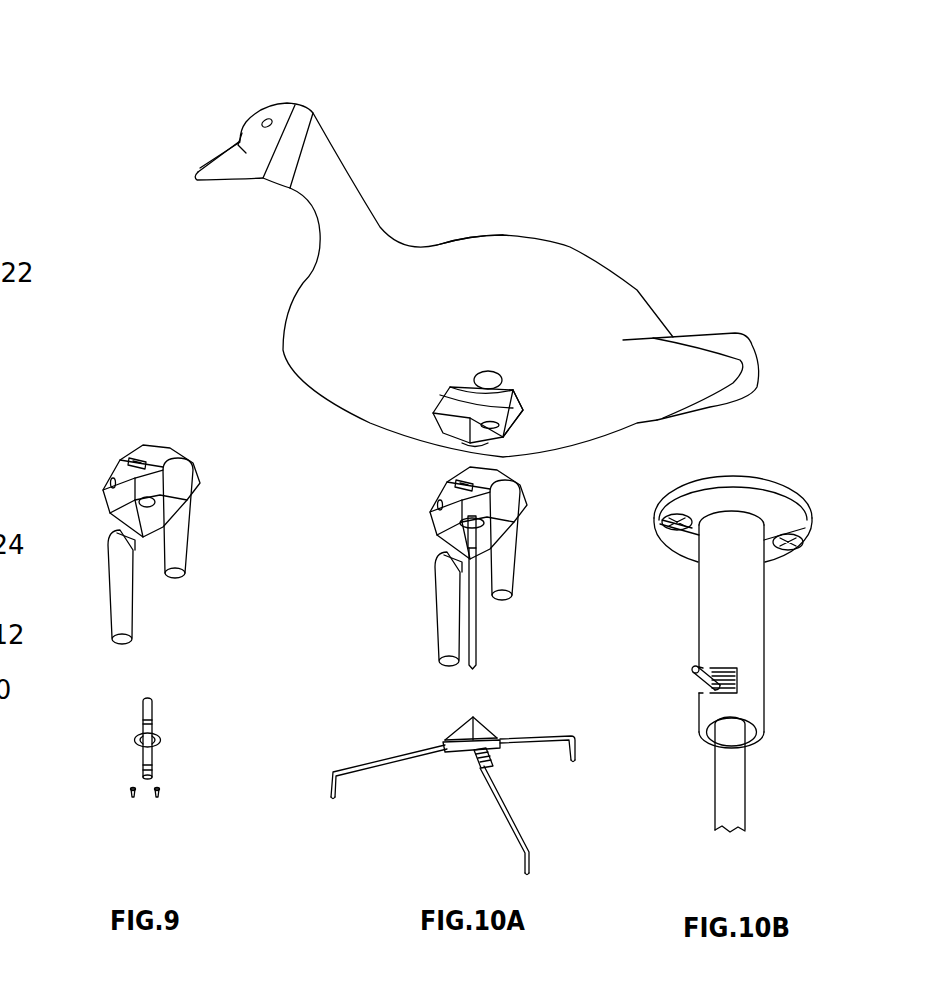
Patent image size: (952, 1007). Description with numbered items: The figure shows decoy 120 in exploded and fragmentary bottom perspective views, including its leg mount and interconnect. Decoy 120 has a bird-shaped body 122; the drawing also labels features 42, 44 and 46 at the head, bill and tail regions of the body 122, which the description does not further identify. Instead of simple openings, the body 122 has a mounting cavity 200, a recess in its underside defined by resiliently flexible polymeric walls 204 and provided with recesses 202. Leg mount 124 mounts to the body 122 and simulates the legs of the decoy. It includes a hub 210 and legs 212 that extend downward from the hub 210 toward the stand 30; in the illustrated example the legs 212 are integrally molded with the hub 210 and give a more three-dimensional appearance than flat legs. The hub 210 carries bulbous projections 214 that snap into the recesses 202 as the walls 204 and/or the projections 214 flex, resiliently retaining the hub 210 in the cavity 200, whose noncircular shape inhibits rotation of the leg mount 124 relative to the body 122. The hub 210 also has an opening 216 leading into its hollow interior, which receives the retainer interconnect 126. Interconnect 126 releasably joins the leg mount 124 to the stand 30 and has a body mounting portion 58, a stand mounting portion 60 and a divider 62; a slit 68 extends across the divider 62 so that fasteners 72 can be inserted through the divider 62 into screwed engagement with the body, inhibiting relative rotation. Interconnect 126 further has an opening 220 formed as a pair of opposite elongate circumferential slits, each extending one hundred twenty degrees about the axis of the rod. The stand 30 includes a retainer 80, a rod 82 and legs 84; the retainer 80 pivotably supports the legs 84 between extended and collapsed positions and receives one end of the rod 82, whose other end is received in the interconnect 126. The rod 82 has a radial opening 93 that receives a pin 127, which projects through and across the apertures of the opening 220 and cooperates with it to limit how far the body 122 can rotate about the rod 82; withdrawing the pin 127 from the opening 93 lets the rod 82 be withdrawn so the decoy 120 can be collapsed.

In FIG. 9, the decoy 120 is at (493, 160).
In FIG. 10B, the decoy 120 is at (756, 616).
In FIG. 9, the body 122 is at (610, 267).
In FIG. 9, the head 42 is at (313, 111).
In FIG. 9, the bill 44 is at (200, 170).
In FIG. 9, the tail 46 is at (743, 335).
In FIG. 9, the mounting cavity 200 is at (443, 403).
In FIG. 9, the recesses 202 is at (503, 422).
In FIG. 9, the resiliently flexible polymeric walls 204 is at (523, 410).
In FIG. 9, the hub 210 is at (197, 493).
In FIG. 10A, the hub 210 is at (534, 513).
In FIG. 9, the legs 212 is at (180, 543).
In FIG. 10A, the legs 212 is at (467, 573).
In FIG. 9, the projections 214 is at (135, 460).
In FIG. 10A, the projections 214 is at (408, 465).
In FIG. 9, the opening 216 is at (140, 500).
In FIG. 10A, the leg mount 124 is at (465, 554).
In FIG. 9, the retainer interconnect 126 is at (153, 705).
In FIG. 10A, the retainer interconnect 126 is at (475, 538).
In FIG. 10B, the retainer interconnect 126 is at (763, 620).
In FIG. 9, the body mounting portion 58 is at (155, 713).
In FIG. 9, the stand mounting portion 60 is at (155, 768).
In FIG. 9, the divider 62 is at (158, 742).
In FIG. 10B, the divider 62 is at (777, 530).
In FIG. 9, the slit 68 is at (143, 725).
In FIG. 10B, the slit 68 is at (773, 533).
In FIG. 9, the opening 220 is at (142, 757).
In FIG. 10B, the opening 220 is at (738, 678).
In FIG. 9, the fasteners 72 is at (133, 797).
In FIG. 10B, the fasteners 72 is at (803, 547).
In FIG. 10A, the stand 30 is at (459, 775).
In FIG. 10A, the retainer 80 is at (487, 727).
In FIG. 10A, the rod 82 is at (478, 620).
In FIG. 10B, the rod 82 is at (747, 780).
In FIG. 10A, the legs 84 is at (418, 757).
In FIG. 10B, the radial opening 93 is at (728, 692).
In FIG. 10B, the pin 127 is at (697, 692).